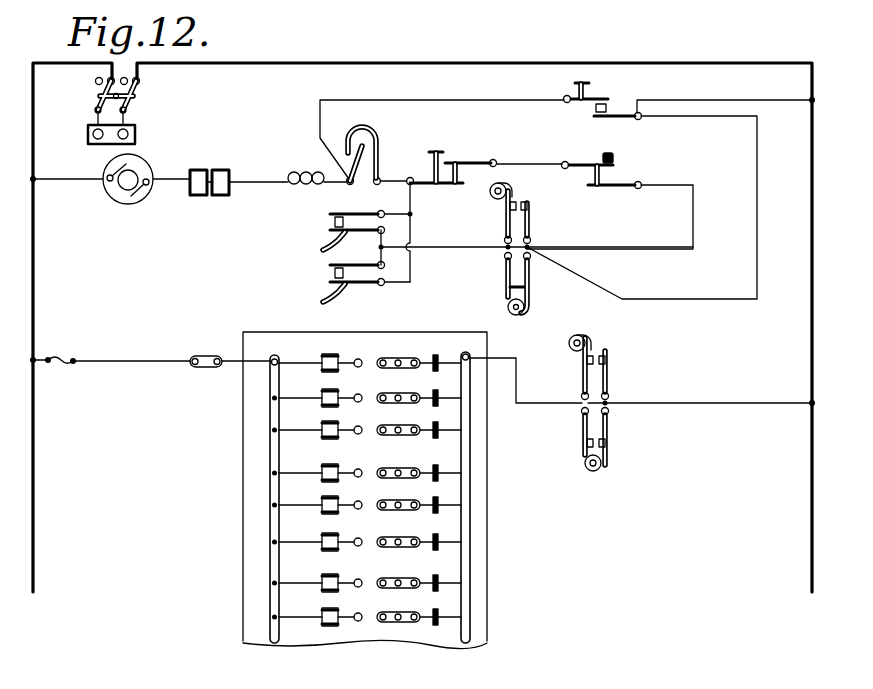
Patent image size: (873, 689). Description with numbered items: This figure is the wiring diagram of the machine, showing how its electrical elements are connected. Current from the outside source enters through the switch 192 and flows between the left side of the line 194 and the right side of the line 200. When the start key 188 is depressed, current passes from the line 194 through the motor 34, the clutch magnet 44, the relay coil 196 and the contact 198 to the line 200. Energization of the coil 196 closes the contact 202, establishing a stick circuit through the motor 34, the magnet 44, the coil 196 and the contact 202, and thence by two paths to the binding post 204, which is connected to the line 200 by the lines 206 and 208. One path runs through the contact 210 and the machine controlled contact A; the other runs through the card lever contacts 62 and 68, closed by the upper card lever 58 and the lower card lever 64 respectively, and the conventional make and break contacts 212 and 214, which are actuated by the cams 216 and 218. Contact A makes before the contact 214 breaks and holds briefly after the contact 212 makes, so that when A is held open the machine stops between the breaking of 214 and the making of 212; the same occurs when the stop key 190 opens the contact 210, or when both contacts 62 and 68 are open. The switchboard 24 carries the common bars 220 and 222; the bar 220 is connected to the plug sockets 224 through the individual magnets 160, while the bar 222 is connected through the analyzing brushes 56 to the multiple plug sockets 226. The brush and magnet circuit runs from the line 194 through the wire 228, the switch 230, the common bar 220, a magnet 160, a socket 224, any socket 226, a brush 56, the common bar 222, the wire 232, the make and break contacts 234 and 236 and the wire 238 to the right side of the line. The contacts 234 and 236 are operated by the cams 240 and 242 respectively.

The switch 192 is at (139, 97).
The clutch magnet 44 is at (204, 186).
The motor 34 is at (129, 188).
The line 194 is at (35, 294).
The relay coil 196 is at (302, 172).
The contact 202 is at (363, 138).
The contact 62 is at (330, 221).
The upper card lever 58 is at (327, 245).
The contact 68 is at (335, 270).
The lower card lever 64 is at (323, 293).
The stop key 190 is at (445, 150).
The contact 210 is at (462, 172).
The cam 218 is at (495, 190).
The make and break contact 214 is at (528, 200).
The binding post 204 is at (533, 245).
The make and break contact 212 is at (510, 284).
The cam 216 is at (528, 313).
The start key 188 is at (590, 87).
The contact 198 is at (612, 108).
The line 208 is at (700, 103).
The line 206 is at (757, 260).
The line 200 is at (812, 270).
The wire 228 is at (127, 358).
The switch 230 is at (210, 350).
The plug sockets 226 is at (410, 357).
The plug sockets 224 is at (361, 428).
The magnets 160 is at (327, 481).
The common bar 222 is at (471, 449).
The switchboard 24 is at (250, 535).
The common bar 220 is at (271, 565).
The analyzing brushes 56 is at (441, 617).
The wire 232 is at (533, 403).
The wire 238 is at (703, 403).
The cam 242 is at (590, 340).
The make and break contact 236 is at (602, 352).
The make and break contact 234 is at (608, 446).
The cam 240 is at (598, 471).
The machine controlled contact A is at (608, 173).